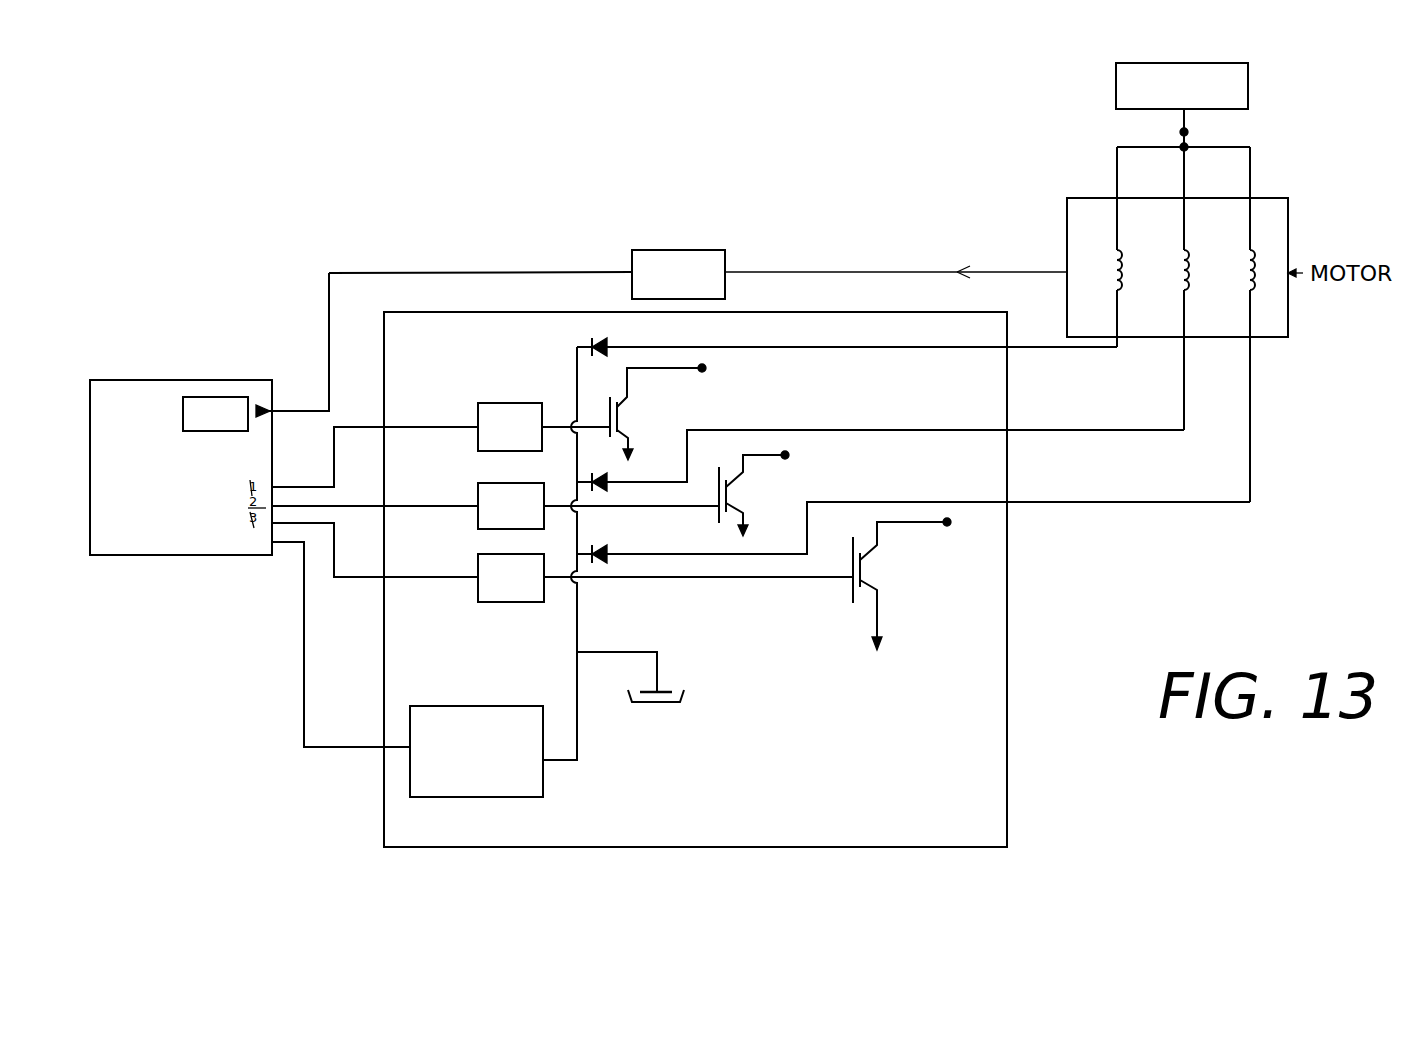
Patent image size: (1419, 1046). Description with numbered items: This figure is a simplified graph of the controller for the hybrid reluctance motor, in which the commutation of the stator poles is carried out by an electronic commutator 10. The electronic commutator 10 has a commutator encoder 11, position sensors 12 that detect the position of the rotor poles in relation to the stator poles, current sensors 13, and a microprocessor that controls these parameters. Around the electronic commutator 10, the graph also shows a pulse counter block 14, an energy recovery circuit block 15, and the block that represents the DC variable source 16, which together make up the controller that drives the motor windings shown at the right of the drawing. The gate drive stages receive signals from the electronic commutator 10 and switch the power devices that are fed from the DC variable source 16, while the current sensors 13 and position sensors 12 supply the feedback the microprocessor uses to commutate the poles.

The electronic commutator 10 is at (155, 402).
The commutator encoder 11 is at (707, 262).
The position sensors 12 is at (512, 416).
The current sensors 13 is at (719, 412).
The pulse counter block 14 is at (223, 398).
The energy recovery circuit block 15 is at (477, 723).
The DC variable source 16 is at (1233, 97).